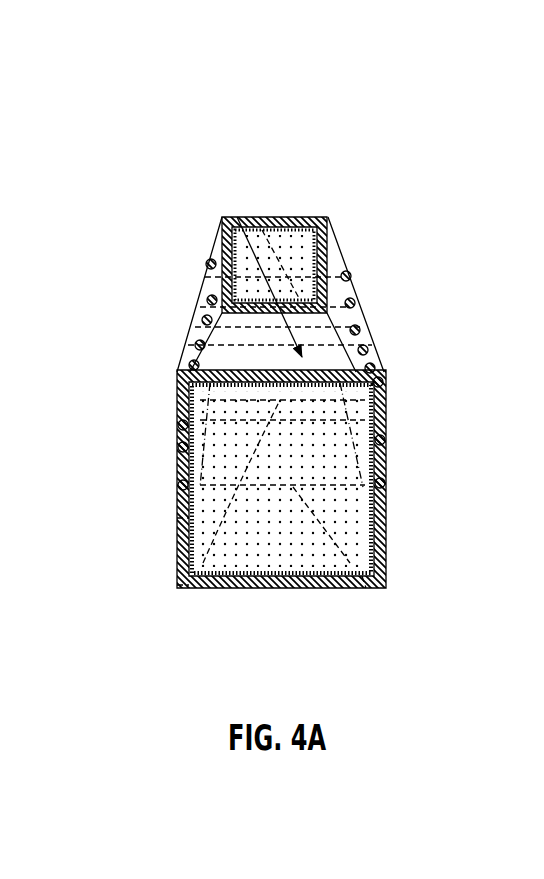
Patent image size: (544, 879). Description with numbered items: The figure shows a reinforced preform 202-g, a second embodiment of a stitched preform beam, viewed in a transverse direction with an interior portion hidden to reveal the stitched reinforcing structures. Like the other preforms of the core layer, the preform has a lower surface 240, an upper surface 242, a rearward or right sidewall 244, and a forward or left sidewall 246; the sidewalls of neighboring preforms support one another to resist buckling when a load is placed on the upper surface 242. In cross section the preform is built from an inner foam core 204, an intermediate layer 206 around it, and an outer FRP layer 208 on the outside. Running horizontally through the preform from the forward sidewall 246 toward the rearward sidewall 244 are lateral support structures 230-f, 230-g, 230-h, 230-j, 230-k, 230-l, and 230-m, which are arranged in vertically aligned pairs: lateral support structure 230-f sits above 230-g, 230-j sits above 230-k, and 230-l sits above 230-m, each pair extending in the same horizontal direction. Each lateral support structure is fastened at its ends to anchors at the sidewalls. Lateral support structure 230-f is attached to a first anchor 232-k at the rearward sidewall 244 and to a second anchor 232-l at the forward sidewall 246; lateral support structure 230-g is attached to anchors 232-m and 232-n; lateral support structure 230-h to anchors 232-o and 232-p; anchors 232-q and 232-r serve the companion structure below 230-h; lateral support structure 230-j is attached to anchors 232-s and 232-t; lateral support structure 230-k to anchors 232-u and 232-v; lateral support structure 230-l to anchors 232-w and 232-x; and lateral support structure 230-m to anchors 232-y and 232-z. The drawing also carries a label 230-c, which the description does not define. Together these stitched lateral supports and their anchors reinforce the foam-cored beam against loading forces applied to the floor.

The reinforced preform 202-g is at (360, 170).
The upper surface 242 is at (237, 217).
The lateral support structure 230-m is at (201, 224).
The lateral support structure 230-h is at (257, 217).
The lateral support structure 230-k is at (212, 289).
The lateral support structure 230-j is at (352, 280).
The lateral support structure 230-l is at (342, 250).
The lateral support structure 230-f is at (177, 518).
The bottom layer 230-c is at (177, 585).
The lateral support structure 230-g is at (366, 588).
The outer FRP layer 208 is at (196, 588).
The intermediate layer 206 is at (241, 588).
The inner foam core 204 is at (272, 588).
The lower surface 240 is at (317, 613).
The rearward sidewall 244 is at (405, 554).
The forward sidewall 246 is at (155, 554).
The anchor 232-x is at (206, 264).
The anchor 232-t is at (208, 302).
The anchor 232-z is at (203, 322).
The anchor 232-p is at (197, 347).
The anchor 232-v is at (191, 367).
The second anchor 232-l is at (178, 426).
The anchor 232-r is at (178, 448).
The anchor 232-n is at (178, 486).
The anchor 232-w is at (350, 276).
The anchor 232-s is at (354, 304).
The anchor 232-y is at (359, 331).
The anchor 232-o is at (366, 352).
The anchor 232-u is at (373, 370).
The first anchor 232-k is at (381, 385).
The anchor 232-q is at (385, 442).
The anchor 232-m is at (385, 484).